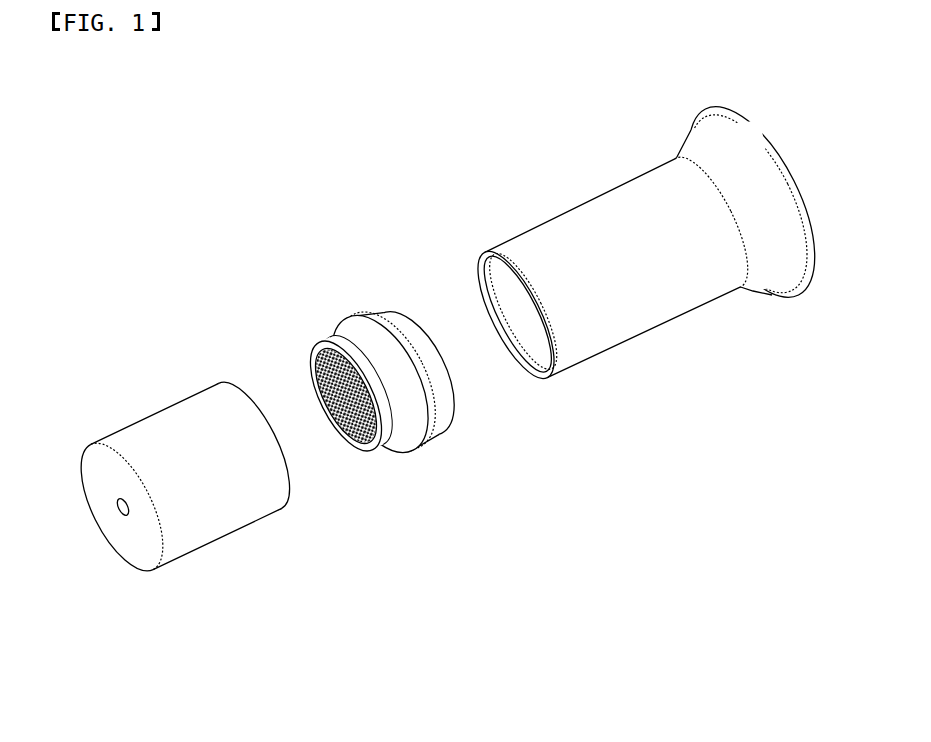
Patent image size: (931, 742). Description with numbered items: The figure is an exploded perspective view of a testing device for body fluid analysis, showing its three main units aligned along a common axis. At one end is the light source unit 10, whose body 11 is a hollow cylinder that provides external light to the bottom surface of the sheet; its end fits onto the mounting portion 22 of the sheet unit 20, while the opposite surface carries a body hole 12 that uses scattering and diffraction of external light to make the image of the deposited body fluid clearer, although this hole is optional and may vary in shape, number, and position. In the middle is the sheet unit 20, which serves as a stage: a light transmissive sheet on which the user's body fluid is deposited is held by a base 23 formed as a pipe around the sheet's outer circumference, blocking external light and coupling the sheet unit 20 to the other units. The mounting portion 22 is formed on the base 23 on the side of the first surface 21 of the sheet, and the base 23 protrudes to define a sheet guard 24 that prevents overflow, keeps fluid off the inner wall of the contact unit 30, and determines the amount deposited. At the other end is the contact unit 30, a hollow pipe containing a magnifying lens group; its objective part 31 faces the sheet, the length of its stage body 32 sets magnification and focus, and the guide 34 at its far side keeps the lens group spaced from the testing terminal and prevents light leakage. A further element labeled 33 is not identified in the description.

The light source unit 10 is at (170, 396).
The body 11 is at (205, 541).
The body hole 12 is at (124, 516).
The sheet unit 20 is at (385, 375).
The first surface 21 is at (360, 449).
The mounting portion 22 is at (331, 336).
The base 23 is at (385, 333).
The sheet guard 24 is at (443, 404).
The contact unit 30 is at (651, 272).
The objective part 31 is at (535, 347).
The stage body 32 is at (618, 306).
The front opening 33 is at (487, 251).
The guide 34 is at (768, 158).